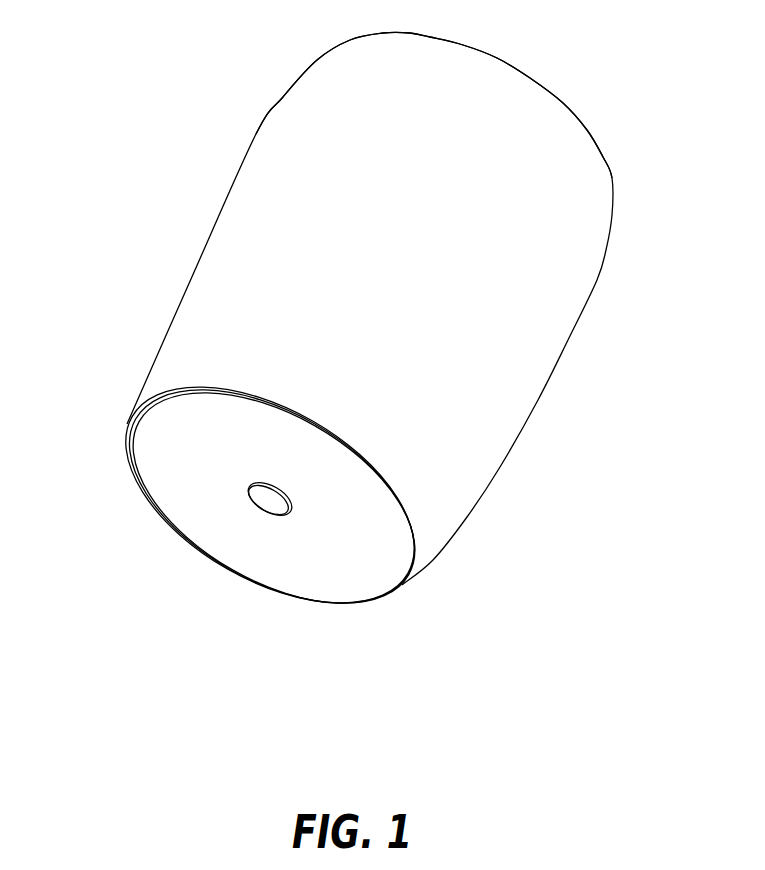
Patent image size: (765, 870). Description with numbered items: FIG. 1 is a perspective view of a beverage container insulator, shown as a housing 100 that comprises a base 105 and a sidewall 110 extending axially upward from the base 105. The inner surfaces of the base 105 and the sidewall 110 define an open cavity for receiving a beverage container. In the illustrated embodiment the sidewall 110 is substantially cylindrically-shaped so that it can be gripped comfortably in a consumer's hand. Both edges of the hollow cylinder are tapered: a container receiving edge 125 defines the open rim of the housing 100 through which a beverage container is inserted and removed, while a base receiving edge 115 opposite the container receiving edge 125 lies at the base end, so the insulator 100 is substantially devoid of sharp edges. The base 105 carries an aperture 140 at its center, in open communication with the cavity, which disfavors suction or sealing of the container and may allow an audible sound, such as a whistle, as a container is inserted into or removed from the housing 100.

The housing 100 is at (373, 335).
The sidewall 110 is at (234, 191).
The container receiving edge 125 is at (614, 178).
The base 105 is at (263, 494).
The base receiving edge 115 is at (403, 585).
The aperture 140 is at (268, 500).